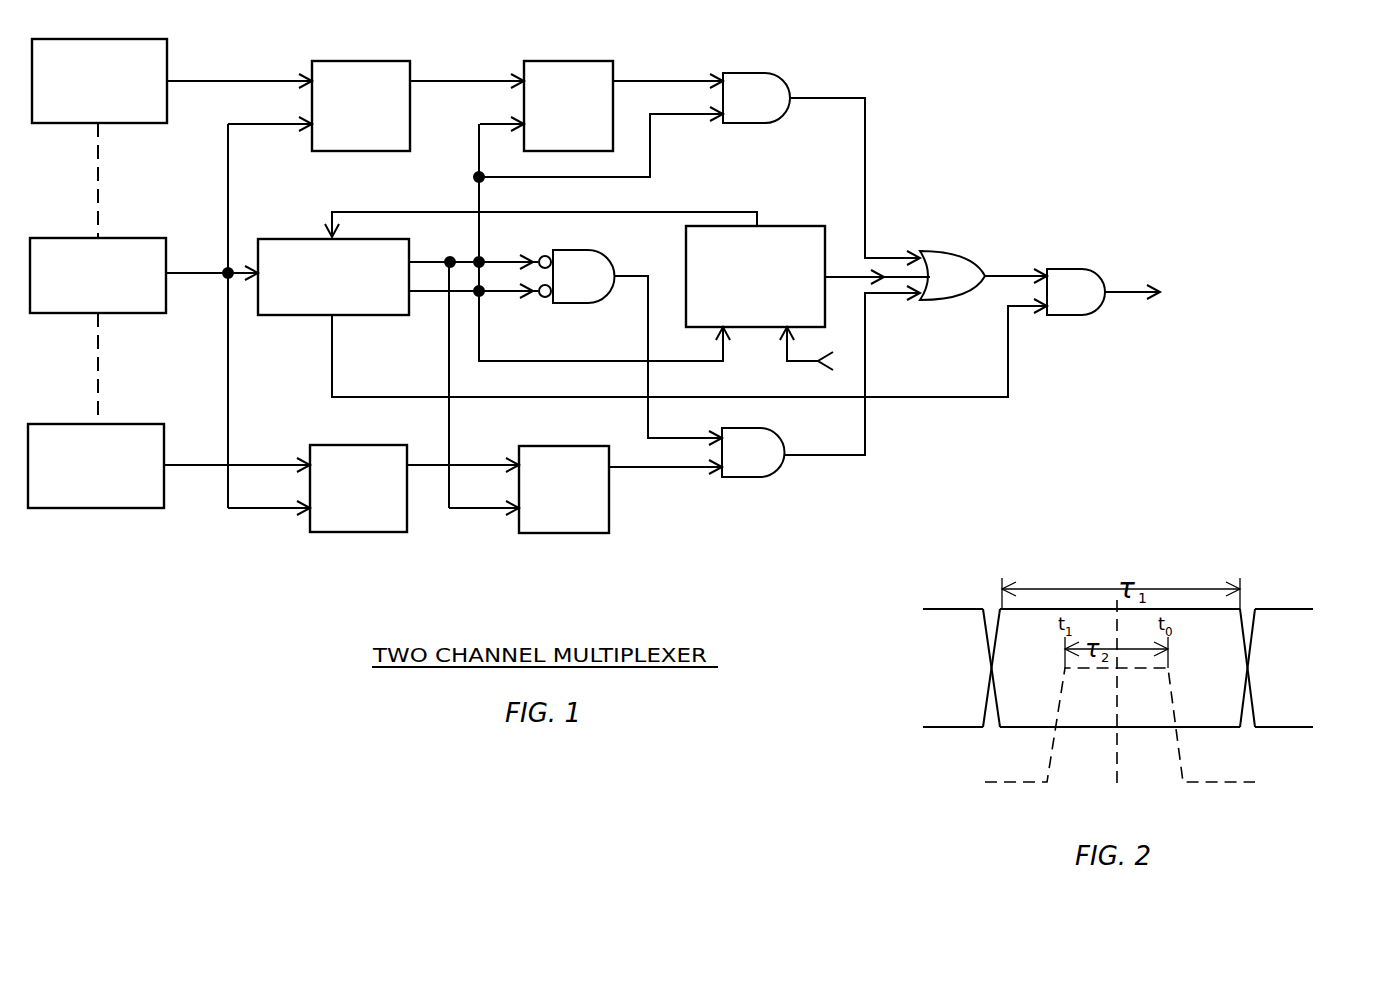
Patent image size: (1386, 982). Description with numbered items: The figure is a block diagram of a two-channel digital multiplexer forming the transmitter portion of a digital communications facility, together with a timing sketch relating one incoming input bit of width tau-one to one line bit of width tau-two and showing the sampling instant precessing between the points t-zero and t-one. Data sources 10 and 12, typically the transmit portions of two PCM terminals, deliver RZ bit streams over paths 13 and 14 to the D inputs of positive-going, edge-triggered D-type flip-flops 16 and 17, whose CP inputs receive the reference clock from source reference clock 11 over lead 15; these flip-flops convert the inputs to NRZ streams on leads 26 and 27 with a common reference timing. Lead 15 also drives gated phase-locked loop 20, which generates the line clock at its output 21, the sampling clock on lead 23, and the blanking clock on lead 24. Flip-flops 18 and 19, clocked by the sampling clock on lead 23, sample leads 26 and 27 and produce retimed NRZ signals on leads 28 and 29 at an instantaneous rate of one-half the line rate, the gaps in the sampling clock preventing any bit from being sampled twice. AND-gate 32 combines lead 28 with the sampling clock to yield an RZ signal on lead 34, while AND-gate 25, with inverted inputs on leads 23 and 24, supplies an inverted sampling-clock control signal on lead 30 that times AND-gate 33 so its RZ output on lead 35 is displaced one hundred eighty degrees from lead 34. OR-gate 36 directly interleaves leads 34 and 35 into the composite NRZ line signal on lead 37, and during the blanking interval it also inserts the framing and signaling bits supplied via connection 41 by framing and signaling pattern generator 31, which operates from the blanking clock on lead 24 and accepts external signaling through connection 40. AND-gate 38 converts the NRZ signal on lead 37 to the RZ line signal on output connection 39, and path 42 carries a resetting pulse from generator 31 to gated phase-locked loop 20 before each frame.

The data source 10 is at (133, 39).
The source reference clock 11 is at (132, 238).
The data source 12 is at (130, 424).
The bit stream path 13 is at (230, 81).
The bit stream path 14 is at (178, 466).
The clock lead 15 is at (180, 274).
The D-type flip-flop 16 is at (375, 61).
The D-type flip-flop 17 is at (372, 445).
The D-type flip-flop 18 is at (580, 61).
The D-type flip-flop 19 is at (573, 446).
The gated phase-locked loop 20 is at (368, 239).
The f2 clock output 21 is at (333, 325).
The f1' clock lead 23 is at (420, 263).
The fb clock lead 24 is at (413, 294).
The AND-gate 25 is at (575, 250).
The NRZ bit stream lead 26 is at (441, 82).
The NRZ bit stream lead 27 is at (410, 468).
The retimed NRZ lead 28 is at (646, 82).
The retimed NRZ lead 29 is at (624, 470).
The control signal lead 30 is at (636, 277).
The framing and signaling pattern generator 31 is at (778, 226).
The AND-gate 32 is at (745, 73).
The AND-gate 33 is at (745, 428).
The RZ signal lead 34 is at (866, 122).
The RZ signal lead 35 is at (866, 445).
The OR-gate 36 is at (945, 252).
The multiplexed composite line signal lead 37 is at (996, 277).
The AND-gate 38 is at (1068, 269).
The output connection 39 is at (1122, 293).
The external signaling connection 40 is at (805, 361).
The signaling bit connection 41 is at (832, 278).
The reset path 42 is at (645, 212).